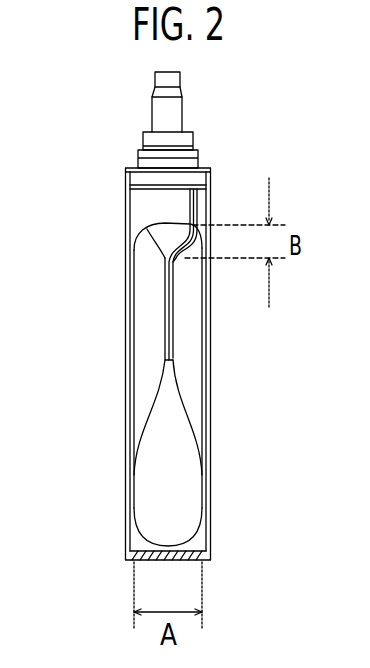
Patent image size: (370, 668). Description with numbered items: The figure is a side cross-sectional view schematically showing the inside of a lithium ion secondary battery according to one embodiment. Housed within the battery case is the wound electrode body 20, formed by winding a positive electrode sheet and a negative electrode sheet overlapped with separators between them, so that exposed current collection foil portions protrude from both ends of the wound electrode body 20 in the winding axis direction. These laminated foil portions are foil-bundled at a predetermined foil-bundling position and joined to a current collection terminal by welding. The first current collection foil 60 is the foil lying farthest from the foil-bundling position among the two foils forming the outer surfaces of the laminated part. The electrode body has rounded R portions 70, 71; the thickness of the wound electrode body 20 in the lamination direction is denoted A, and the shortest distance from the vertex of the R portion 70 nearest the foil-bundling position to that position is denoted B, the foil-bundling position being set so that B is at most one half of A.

The wound electrode body 20 is at (183, 225).
The first current collection foil 60 is at (158, 340).
The R portion 70 is at (156, 226).
The R portion 71 is at (158, 548).